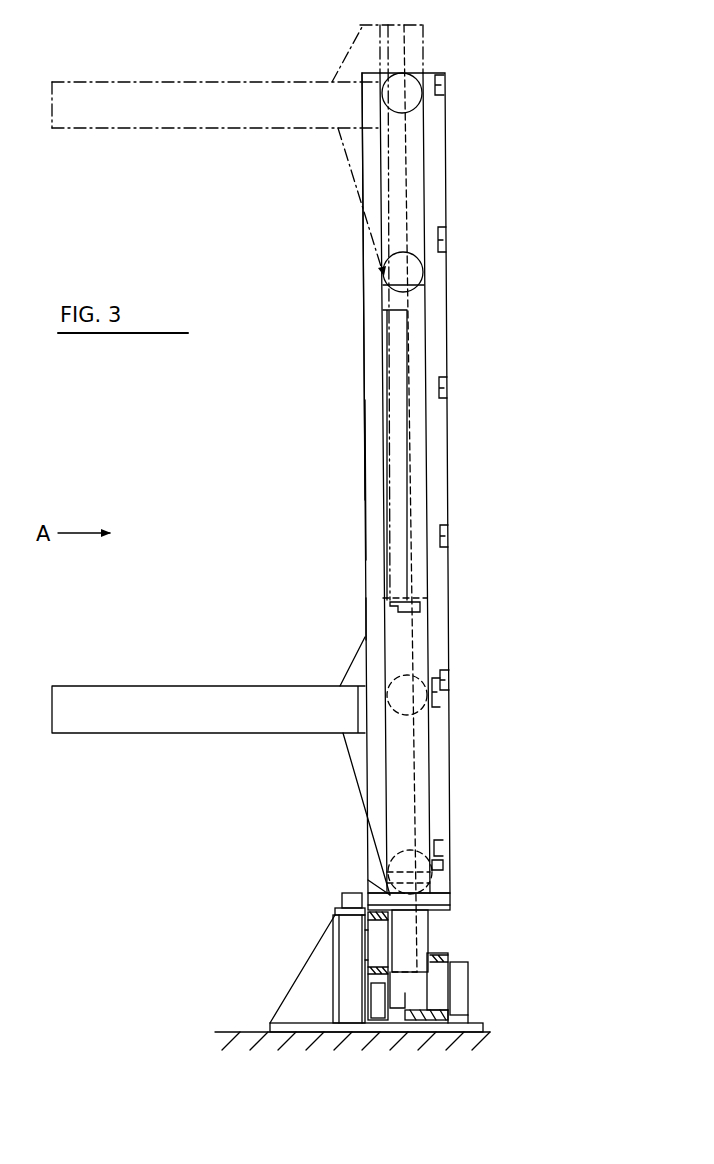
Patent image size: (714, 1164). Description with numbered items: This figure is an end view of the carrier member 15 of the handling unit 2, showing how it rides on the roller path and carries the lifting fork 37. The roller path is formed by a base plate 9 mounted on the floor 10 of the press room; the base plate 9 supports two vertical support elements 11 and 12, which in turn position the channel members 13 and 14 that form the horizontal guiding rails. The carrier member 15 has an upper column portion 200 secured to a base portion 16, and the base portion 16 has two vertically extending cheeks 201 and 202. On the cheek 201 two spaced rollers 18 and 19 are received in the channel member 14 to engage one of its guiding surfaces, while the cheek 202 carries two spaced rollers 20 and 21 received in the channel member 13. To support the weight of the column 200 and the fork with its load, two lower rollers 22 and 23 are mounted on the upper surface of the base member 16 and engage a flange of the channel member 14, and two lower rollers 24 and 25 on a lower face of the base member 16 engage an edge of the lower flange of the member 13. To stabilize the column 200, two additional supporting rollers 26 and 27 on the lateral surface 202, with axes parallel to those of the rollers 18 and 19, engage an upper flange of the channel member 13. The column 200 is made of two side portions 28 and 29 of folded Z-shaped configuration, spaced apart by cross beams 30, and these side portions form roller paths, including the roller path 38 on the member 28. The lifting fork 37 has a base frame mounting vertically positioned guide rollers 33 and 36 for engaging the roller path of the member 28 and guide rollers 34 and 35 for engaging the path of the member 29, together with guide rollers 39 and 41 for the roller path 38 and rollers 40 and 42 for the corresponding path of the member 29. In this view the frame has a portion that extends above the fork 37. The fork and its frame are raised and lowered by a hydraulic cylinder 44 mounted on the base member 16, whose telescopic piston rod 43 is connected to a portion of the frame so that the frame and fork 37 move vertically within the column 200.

The handling unit 2 is at (348, 487).
The base plate 9 is at (480, 1040).
The floor 10 is at (330, 1050).
The vertical support element 11 is at (470, 1010).
The vertical support element 12 is at (350, 930).
The channel member 13 is at (468, 990).
The channel member 14 is at (372, 965).
The carrier member 15 is at (453, 458).
The base portion 16 is at (452, 898).
The roller 18 is at (283, 932).
The roller 19 is at (352, 908).
The roller 20 is at (440, 1022).
The roller 21 is at (445, 1025).
The lower roller 22 is at (281, 841).
The lower roller 23 is at (385, 890).
The lower roller 24 is at (398, 1030).
The lower roller 25 is at (420, 1022).
The supporting roller 26 is at (524, 973).
The supporting roller 27 is at (450, 945).
The side portion 28 is at (492, 483).
The side portion 29 is at (440, 300).
The cross beam 30 is at (447, 80).
The guide roller 33 is at (527, 713).
The guide roller 34 is at (440, 707).
The guide roller 35 is at (528, 817).
The guide roller 36 is at (442, 850).
The lifting fork 37 is at (225, 686).
The roller path 38 is at (422, 514).
The guide roller 39 is at (504, 661).
The guide roller 40 is at (418, 670).
The guide roller 41 is at (504, 863).
The guide roller 42 is at (445, 868).
The telescopic piston rod 43 is at (367, 625).
The hydraulic cylinder 44 is at (388, 607).
The upper column portion 200 is at (363, 402).
The cheek 201 is at (370, 947).
The cheek 202 is at (440, 925).